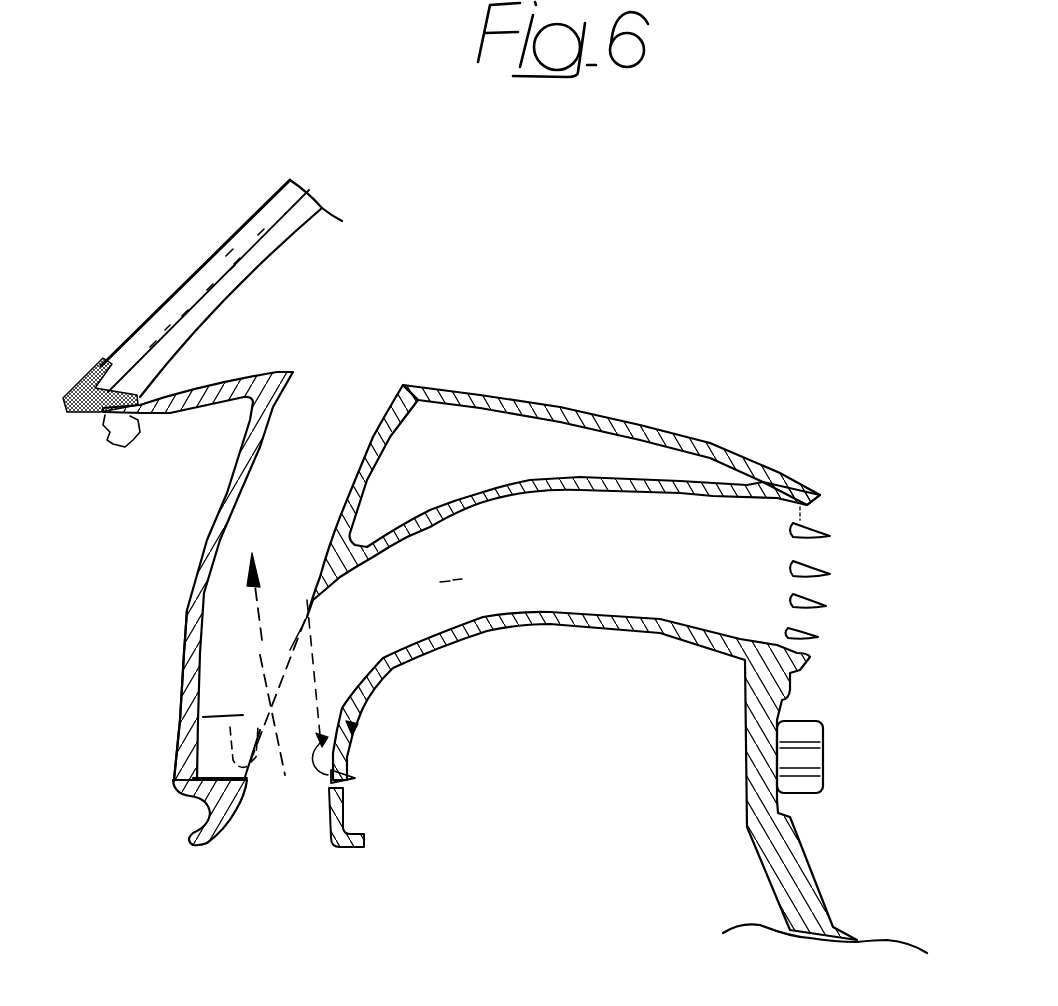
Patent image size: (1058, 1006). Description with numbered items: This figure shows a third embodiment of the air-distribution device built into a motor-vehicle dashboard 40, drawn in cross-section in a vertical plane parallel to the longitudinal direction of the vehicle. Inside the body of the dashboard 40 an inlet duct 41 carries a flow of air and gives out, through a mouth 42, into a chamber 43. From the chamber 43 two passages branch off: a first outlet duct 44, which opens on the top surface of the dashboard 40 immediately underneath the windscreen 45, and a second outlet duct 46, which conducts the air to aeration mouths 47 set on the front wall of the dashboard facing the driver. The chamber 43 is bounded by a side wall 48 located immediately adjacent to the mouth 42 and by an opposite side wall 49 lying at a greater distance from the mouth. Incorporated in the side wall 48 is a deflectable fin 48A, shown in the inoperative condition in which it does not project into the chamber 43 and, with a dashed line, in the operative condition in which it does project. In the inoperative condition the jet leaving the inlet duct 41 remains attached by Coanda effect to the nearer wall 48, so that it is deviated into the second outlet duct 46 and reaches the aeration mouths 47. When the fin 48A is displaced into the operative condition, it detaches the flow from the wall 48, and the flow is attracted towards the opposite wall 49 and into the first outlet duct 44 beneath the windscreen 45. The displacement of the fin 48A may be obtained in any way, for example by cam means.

The motor-vehicle dashboard 40 is at (771, 413).
The inlet duct 41 is at (283, 823).
The mouth 42 is at (247, 780).
The chamber 43 is at (243, 715).
The first outlet duct 44 is at (297, 467).
The windscreen 45 is at (252, 237).
The second outlet duct 46 is at (507, 587).
The aeration mouths 47 is at (810, 517).
The side wall 48 is at (352, 725).
The fin 48A is at (320, 737).
The side wall 49 is at (195, 698).